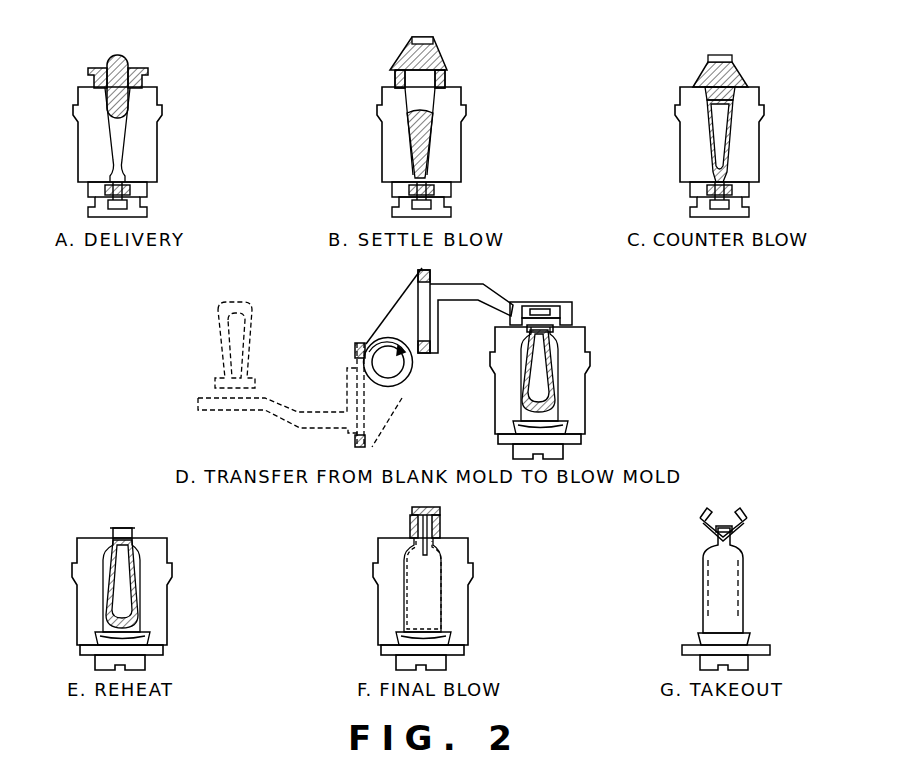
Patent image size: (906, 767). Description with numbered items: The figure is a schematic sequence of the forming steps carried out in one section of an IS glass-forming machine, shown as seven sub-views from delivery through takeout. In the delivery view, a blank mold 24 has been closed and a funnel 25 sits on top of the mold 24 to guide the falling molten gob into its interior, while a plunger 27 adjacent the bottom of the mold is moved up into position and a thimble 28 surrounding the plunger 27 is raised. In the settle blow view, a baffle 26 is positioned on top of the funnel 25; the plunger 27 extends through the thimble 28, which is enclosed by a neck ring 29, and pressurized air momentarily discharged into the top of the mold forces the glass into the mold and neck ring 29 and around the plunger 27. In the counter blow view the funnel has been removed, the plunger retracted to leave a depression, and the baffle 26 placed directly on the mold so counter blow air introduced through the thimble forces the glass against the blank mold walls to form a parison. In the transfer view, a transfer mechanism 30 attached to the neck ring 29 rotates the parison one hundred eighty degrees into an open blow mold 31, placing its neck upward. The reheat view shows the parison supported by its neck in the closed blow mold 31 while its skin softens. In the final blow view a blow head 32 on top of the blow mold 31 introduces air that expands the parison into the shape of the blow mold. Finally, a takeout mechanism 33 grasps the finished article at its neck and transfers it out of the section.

The blank mold 24 is at (88, 153).
The funnel 25 is at (143, 83).
The baffle 26 is at (438, 58).
The plunger 27 is at (425, 182).
The thimble 28 is at (405, 208).
The neck ring 29 is at (447, 195).
The transfer mechanism 30 is at (398, 309).
The blow mold 31 is at (577, 412).
The blow head 32 is at (440, 523).
The takeout mechanism 33 is at (753, 527).